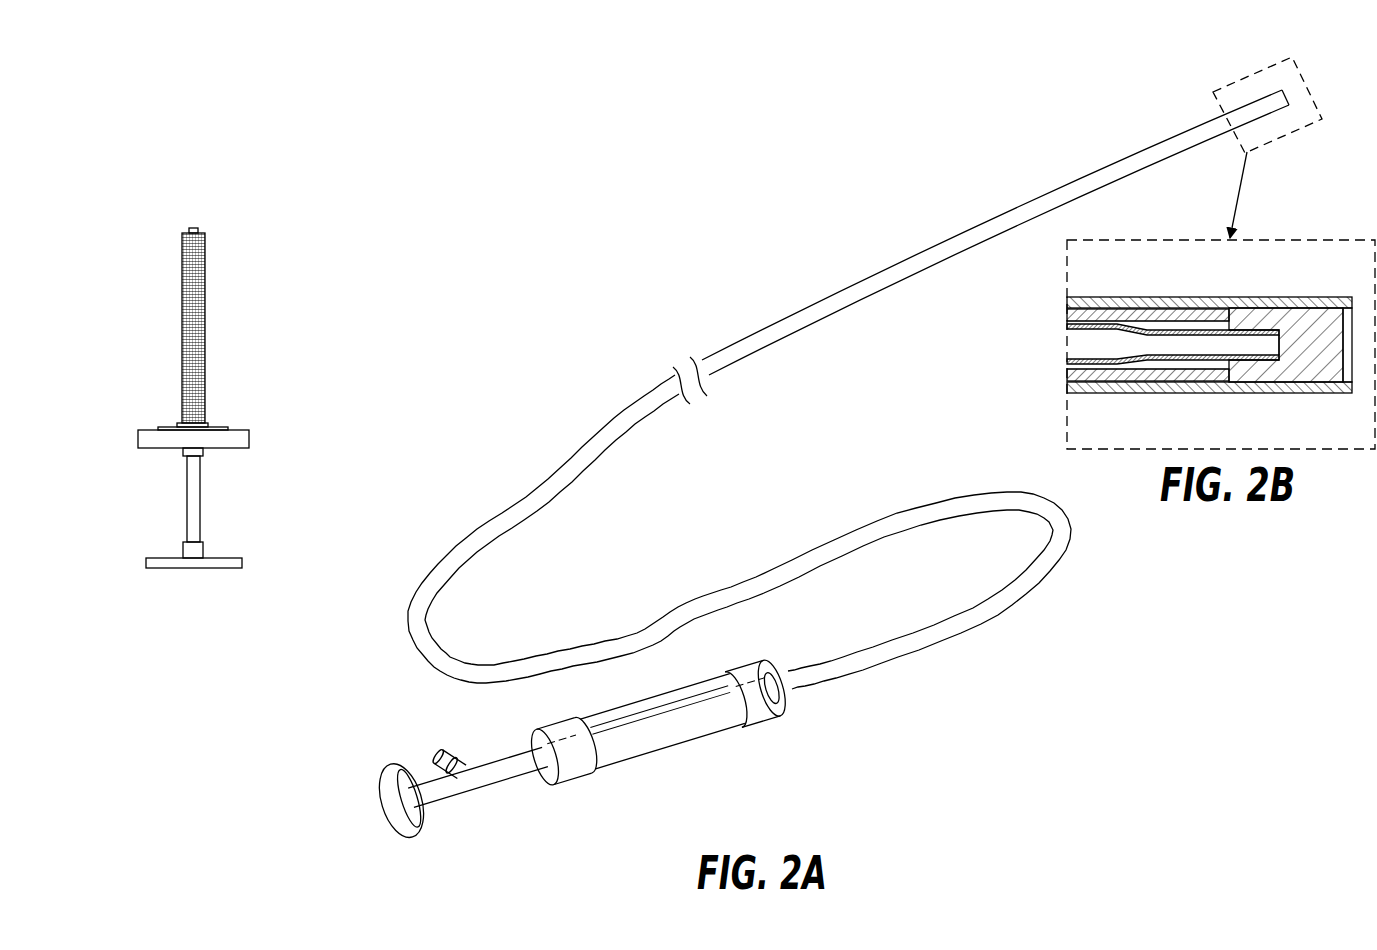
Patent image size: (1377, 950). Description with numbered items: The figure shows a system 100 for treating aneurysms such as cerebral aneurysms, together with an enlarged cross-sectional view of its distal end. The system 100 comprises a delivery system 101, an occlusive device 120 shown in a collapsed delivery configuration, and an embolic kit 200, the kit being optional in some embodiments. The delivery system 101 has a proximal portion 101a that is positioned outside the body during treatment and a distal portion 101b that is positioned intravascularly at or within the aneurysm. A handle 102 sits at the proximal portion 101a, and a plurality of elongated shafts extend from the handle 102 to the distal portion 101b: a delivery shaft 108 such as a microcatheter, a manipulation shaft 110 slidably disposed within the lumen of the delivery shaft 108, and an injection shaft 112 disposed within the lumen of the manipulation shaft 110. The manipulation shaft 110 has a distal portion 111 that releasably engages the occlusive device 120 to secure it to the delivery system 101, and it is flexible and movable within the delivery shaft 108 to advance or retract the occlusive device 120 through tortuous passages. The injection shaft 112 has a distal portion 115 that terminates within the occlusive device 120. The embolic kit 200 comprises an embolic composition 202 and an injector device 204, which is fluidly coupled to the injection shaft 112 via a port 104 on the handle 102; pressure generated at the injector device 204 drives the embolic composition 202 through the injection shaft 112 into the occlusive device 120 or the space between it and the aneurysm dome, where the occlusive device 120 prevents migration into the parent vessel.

In FIG. 2A, the system 100 is at (491, 150).
In FIG. 2A, the delivery system 101 is at (705, 314).
In FIG. 2A, the proximal portion 101a is at (694, 776).
In FIG. 2A, the distal portion 101b is at (1243, 70).
In FIG. 2A, the handle 102 is at (750, 731).
In FIG. 2A, the port 104 is at (431, 747).
In FIG. 2A, the delivery shaft 108 is at (1040, 197).
In FIG. 2B, the delivery shaft 108 is at (1147, 302).
In FIG. 2B, the manipulation shaft 110 is at (1162, 318).
In FIG. 2B, the distal portion 111 is at (1212, 312).
In FIG. 2B, the injection shaft 112 is at (1177, 358).
In FIG. 2B, the distal portion 115 is at (1268, 364).
In FIG. 2B, the occlusive device 120 is at (1302, 330).
In FIG. 2A, the embolic kit 200 is at (168, 292).
In FIG. 2A, the embolic composition 202 is at (199, 298).
In FIG. 2A, the injector device 204 is at (250, 438).